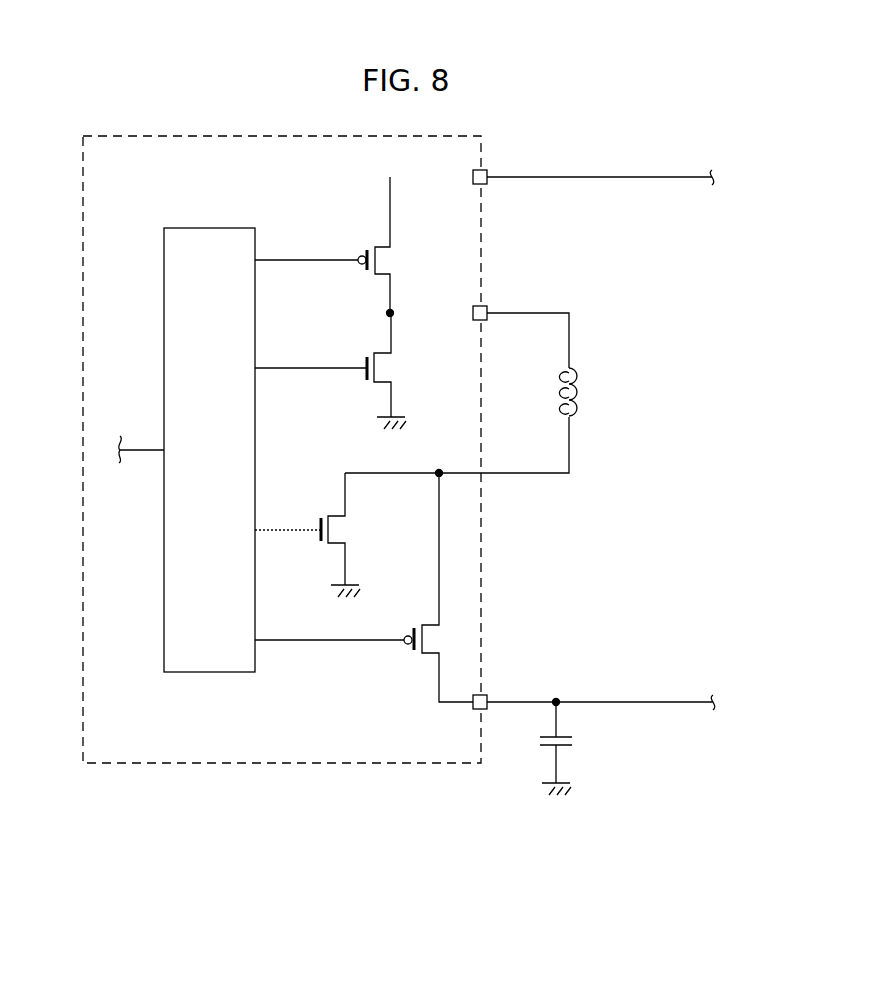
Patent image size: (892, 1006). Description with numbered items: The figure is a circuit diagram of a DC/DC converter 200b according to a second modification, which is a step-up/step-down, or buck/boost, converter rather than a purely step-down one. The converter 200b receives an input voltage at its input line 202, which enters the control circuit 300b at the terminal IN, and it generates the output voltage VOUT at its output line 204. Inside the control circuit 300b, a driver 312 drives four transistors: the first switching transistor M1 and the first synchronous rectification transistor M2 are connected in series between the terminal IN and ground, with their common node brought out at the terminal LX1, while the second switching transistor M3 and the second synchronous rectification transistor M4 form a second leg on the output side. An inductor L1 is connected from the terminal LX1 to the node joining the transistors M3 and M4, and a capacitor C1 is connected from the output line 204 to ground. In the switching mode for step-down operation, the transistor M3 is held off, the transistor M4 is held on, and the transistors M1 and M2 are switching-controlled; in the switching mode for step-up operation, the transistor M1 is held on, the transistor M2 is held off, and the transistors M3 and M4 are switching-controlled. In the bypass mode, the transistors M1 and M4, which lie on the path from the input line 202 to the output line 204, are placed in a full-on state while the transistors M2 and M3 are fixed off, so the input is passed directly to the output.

The DC/DC converter 200b is at (430, 917).
The control circuit 300b is at (253, 764).
The driver 312 is at (205, 672).
The input line 202 is at (640, 177).
The output line 204 is at (640, 702).
The first switching transistor M1 is at (398, 264).
The first synchronous rectification transistor M2 is at (396, 362).
The second switching transistor M3 is at (350, 526).
The second synchronous rectification transistor M4 is at (417, 658).
The inductor L1 is at (587, 392).
The capacitor C1 is at (575, 745).
The input terminal IN is at (487, 170).
The switching terminal LX1 is at (487, 306).
The output voltage VOUT is at (540, 690).